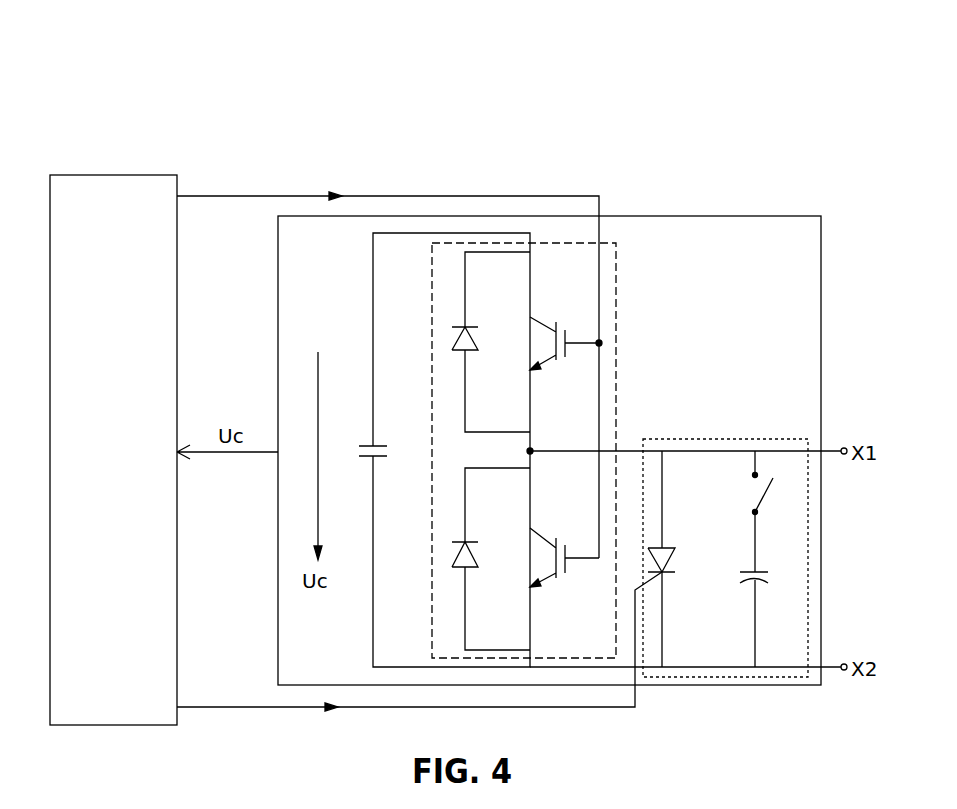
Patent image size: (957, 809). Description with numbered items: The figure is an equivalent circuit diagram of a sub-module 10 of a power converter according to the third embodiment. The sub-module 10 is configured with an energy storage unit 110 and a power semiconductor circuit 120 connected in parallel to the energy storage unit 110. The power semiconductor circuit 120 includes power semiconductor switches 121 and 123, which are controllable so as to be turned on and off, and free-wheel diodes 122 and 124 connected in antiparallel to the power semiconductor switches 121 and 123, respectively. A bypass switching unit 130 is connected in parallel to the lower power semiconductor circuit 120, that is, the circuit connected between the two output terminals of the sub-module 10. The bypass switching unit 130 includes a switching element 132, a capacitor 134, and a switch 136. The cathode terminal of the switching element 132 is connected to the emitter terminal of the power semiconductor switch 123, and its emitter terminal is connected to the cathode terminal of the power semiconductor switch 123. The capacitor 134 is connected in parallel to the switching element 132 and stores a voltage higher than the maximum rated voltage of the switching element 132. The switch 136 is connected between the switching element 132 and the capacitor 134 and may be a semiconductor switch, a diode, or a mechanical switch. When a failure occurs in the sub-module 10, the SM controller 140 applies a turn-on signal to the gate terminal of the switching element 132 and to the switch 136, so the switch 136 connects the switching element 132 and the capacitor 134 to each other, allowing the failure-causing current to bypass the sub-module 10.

The sub-module 10 is at (722, 215).
The energy storage unit 110 is at (372, 445).
The power semiconductor circuit 120 is at (617, 298).
The power semiconductor switch 121 is at (566, 330).
The free-wheel diode 122 is at (452, 333).
The power semiconductor switch 123 is at (571, 575).
The free-wheel diode 124 is at (452, 545).
The bypass switching unit 130 is at (770, 438).
The switching element 132 is at (665, 575).
The capacitor 134 is at (762, 585).
The switch 136 is at (770, 495).
The SM controller 140 is at (112, 175).